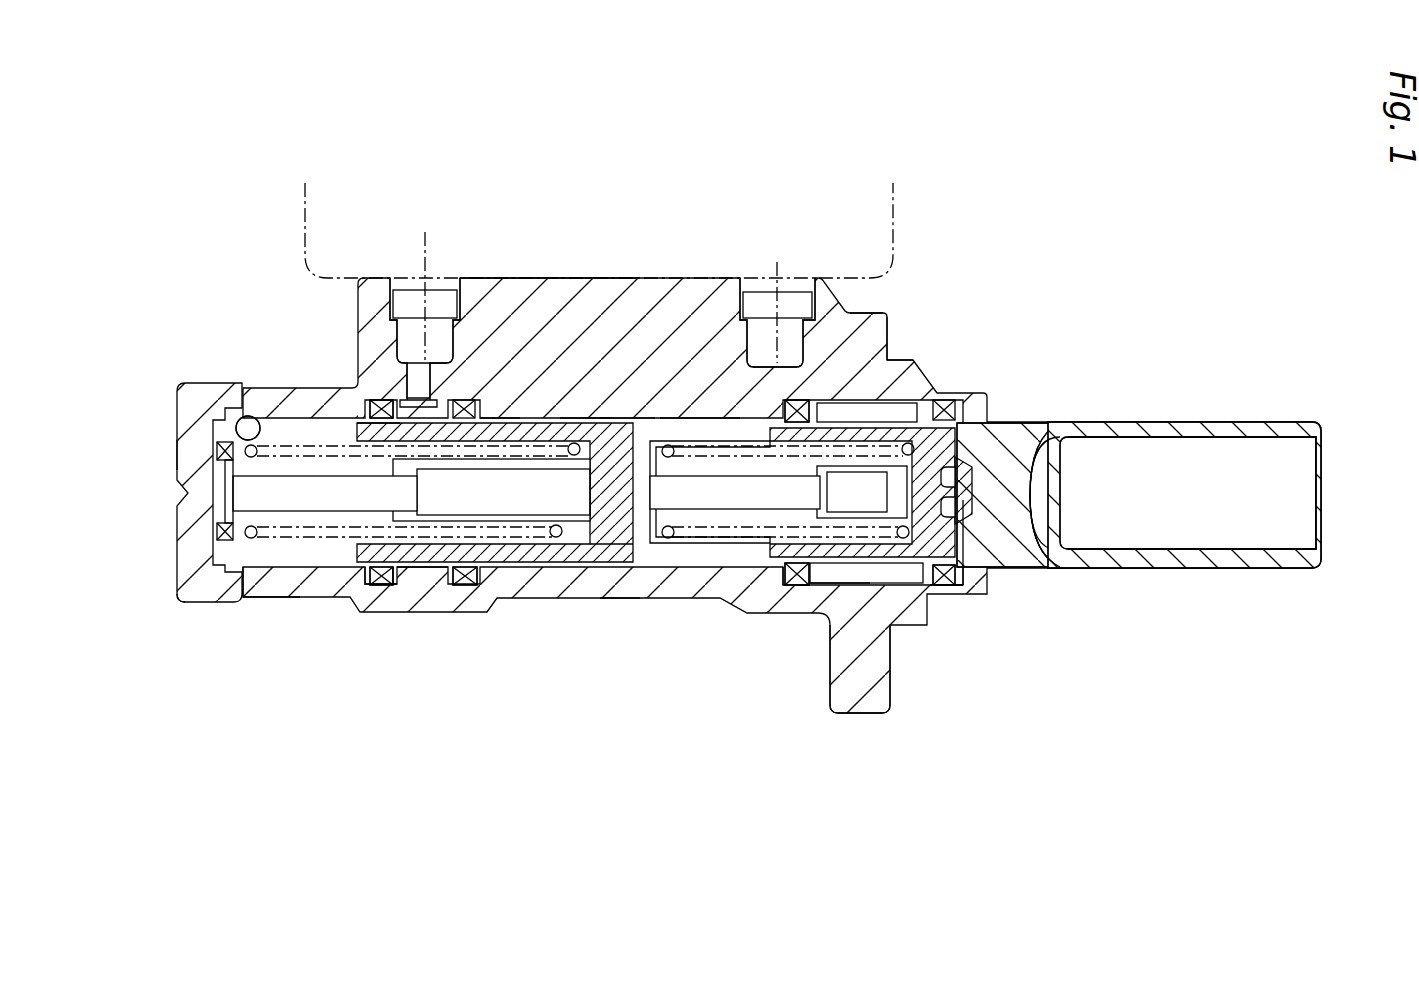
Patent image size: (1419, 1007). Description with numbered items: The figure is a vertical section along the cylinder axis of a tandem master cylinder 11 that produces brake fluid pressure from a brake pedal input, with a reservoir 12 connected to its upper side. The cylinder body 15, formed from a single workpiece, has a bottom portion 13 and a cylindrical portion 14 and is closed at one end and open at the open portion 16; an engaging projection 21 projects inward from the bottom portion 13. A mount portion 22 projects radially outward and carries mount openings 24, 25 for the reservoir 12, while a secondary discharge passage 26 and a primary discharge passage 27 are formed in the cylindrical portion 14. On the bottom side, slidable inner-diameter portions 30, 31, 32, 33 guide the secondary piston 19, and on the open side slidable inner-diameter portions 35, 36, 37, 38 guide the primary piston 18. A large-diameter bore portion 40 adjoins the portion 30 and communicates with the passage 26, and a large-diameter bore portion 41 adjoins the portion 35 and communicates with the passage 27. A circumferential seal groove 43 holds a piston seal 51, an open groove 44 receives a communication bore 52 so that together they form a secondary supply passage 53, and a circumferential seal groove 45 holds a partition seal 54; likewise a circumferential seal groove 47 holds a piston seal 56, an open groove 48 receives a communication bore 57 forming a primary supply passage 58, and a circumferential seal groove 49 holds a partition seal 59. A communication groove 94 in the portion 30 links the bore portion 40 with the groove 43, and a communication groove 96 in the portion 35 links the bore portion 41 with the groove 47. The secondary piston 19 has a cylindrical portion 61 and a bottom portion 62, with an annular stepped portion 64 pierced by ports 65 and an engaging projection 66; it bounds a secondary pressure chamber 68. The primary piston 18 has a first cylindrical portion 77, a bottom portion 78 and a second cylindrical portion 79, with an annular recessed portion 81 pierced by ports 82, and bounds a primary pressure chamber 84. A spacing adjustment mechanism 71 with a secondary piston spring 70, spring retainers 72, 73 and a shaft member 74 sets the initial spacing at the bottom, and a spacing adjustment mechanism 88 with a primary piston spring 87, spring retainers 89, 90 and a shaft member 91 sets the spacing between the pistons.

The master cylinder 11 is at (982, 310).
The reservoir 12 is at (905, 228).
The bottom portion 13 is at (185, 454).
The cylindrical portion 14 is at (617, 592).
The cylinder body 15 is at (175, 378).
The open portion 16 is at (1012, 477).
The primary piston 18 is at (1182, 417).
The secondary piston 19 is at (585, 405).
The engaging projection 21 is at (226, 532).
The mount portion 22 is at (547, 305).
The mount opening 24 is at (413, 360).
The mount opening 25 is at (763, 360).
The secondary discharge passage 26 is at (245, 416).
The primary discharge passage 27 is at (500, 397).
The slidable inner-diameter portion 30 is at (317, 552).
The slidable inner-diameter portion 31 is at (400, 586).
The slidable inner-diameter portion 32 is at (418, 586).
The slidable inner-diameter portion 33 is at (508, 586).
The slidable inner-diameter portion 35 is at (778, 586).
The slidable inner-diameter portion 36 is at (830, 586).
The slidable inner-diameter portion 37 is at (925, 586).
The slidable inner-diameter portion 38 is at (963, 545).
The large-diameter bore portion 40 is at (267, 594).
The large-diameter bore portion 41 is at (692, 522).
The circumferential seal groove 43 is at (375, 596).
The open groove 44 is at (402, 603).
The circumferential seal groove 45 is at (462, 586).
The circumferential seal groove 47 is at (805, 586).
The open groove 48 is at (868, 580).
The circumferential seal groove 49 is at (936, 586).
The piston seal 51 is at (388, 602).
The communication bore 52 is at (423, 372).
The secondary supply passage 53 is at (413, 377).
The partition seal 54 is at (452, 586).
The piston seal 56 is at (797, 586).
The communication bore 57 is at (878, 317).
The primary supply passage 58 is at (885, 408).
The partition seal 59 is at (948, 586).
The cylindrical portion 61 is at (485, 397).
The bottom portion 62 is at (612, 412).
The annular stepped portion 64 is at (373, 400).
The ports 65 is at (388, 400).
The engaging projection 66 is at (677, 418).
The secondary pressure chamber 68 is at (225, 598).
The secondary piston spring 70 is at (183, 594).
The spacing adjustment mechanism 71 is at (307, 594).
The spring retainer 72 is at (226, 445).
The spring retainer 73 is at (565, 525).
The shaft member 74 is at (238, 494).
The first cylindrical portion 77 is at (908, 424).
The bottom portion 78 is at (1037, 468).
The second cylindrical portion 79 is at (1127, 430).
The annular recessed portion 81 is at (790, 400).
The ports 82 is at (810, 403).
The primary pressure chamber 84 is at (660, 527).
The primary piston spring 87 is at (948, 402).
The spacing adjustment mechanism 88 is at (892, 415).
The spring retainer 89 is at (640, 410).
The spring retainer 90 is at (960, 540).
The shaft member 91 is at (727, 497).
The communication groove 94 is at (367, 425).
The communication groove 96 is at (715, 420).